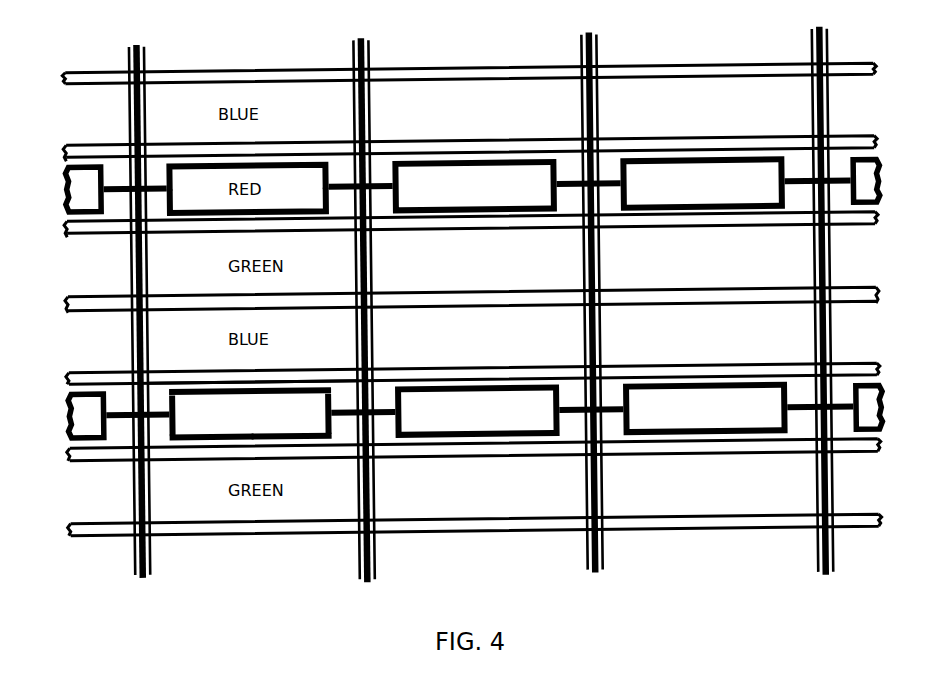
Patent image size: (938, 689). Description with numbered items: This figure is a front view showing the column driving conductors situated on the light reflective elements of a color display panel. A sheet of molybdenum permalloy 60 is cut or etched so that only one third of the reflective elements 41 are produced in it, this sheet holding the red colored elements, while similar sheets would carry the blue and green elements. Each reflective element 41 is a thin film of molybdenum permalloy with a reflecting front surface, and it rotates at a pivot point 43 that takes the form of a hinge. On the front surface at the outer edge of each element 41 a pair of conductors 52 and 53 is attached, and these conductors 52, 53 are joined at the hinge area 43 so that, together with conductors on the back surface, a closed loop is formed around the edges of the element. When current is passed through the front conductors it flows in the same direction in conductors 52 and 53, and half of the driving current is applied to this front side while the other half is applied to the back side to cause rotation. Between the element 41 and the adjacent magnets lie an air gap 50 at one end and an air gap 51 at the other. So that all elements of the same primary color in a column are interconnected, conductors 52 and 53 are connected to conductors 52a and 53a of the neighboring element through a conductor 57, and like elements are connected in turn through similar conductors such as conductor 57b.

The sheet of molybdenum permalloy 60 is at (872, 67).
The conductor 57 is at (137, 268).
The conductor 57b is at (367, 498).
The conductor 52a is at (288, 167).
The conductor 53a is at (293, 212).
The reflective element 41 is at (250, 402).
The conductor 52 is at (200, 390).
The conductor 53 is at (290, 440).
The air gap 51 is at (207, 441).
The air gap 50 is at (303, 385).
The pivot point 43 is at (157, 420).